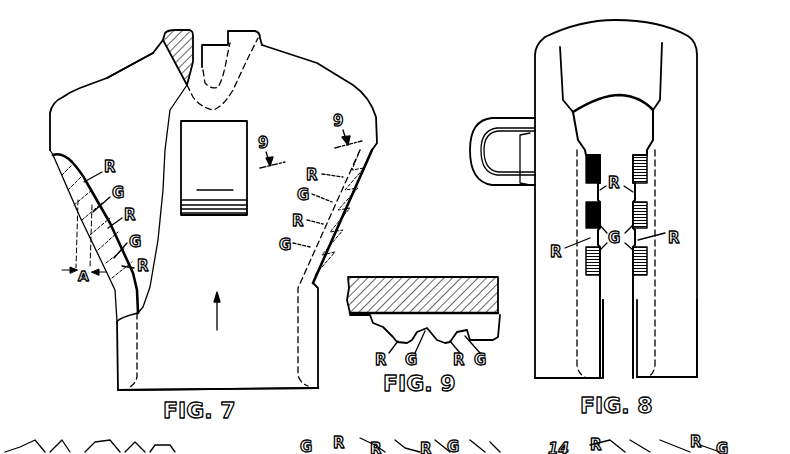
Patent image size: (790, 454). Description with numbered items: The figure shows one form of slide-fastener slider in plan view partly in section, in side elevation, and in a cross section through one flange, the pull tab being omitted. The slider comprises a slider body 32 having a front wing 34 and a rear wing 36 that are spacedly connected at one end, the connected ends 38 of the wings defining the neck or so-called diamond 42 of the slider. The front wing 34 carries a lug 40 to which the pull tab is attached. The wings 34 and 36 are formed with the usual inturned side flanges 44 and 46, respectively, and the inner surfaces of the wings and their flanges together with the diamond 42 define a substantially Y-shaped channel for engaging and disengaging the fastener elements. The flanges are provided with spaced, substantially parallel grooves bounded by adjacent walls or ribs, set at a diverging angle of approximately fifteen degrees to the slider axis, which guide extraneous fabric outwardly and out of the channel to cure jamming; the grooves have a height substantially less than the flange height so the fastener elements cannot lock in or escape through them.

In FIG. 7, the slider body 32 is at (326, 57).
In FIG. 8, the slider body 32 is at (522, 68).
In FIG. 7, the front wing 34 is at (150, 362).
In FIG. 9, the front wing 34 is at (435, 278).
In FIG. 8, the front wing 34 is at (545, 268).
In FIG. 7, the rear wing 36 is at (107, 80).
In FIG. 8, the rear wing 36 is at (690, 302).
In FIG. 7, the connected ends of the wings 38 is at (212, 48).
In FIG. 7, the lug 40 is at (220, 216).
In FIG. 8, the lug 40 is at (472, 160).
In FIG. 7, the neck or diamond 42 is at (178, 62).
In FIG. 8, the neck or diamond 42 is at (650, 35).
In FIG. 9, the inturned side flange of front wing 44 is at (382, 327).
In FIG. 8, the inturned side flange of front wing 44 is at (598, 152).
In FIG. 8, the inturned side flange of rear wing 46 is at (645, 370).